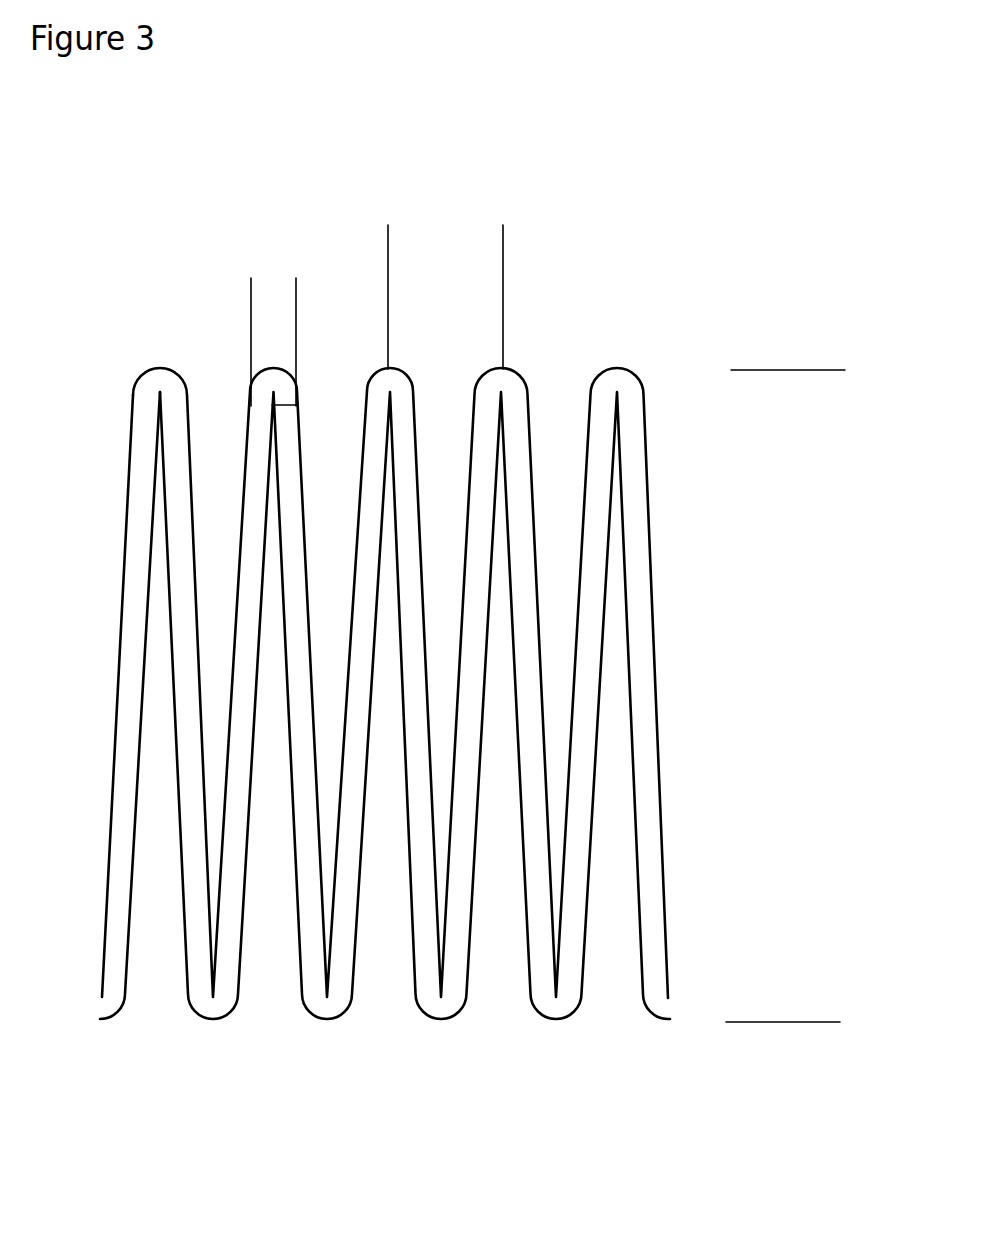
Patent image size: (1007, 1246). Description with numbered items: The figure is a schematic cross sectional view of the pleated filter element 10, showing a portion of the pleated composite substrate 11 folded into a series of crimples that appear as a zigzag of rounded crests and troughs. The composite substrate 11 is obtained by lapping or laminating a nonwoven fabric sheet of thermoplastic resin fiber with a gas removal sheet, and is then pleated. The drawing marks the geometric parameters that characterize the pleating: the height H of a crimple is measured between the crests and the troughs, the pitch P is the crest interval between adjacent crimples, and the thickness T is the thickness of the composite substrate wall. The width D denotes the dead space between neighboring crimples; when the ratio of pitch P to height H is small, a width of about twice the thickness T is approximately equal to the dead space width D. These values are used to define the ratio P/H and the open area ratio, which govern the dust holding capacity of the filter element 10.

The filter element 10 is at (394, 620).
The pleated composite substrate 11 is at (122, 832).
The pitch of the crimples P is at (388, 268).
The width of the dead space D is at (215, 318).
The thickness of the composite substrate T is at (235, 405).
The height of the crimple H is at (790, 1002).